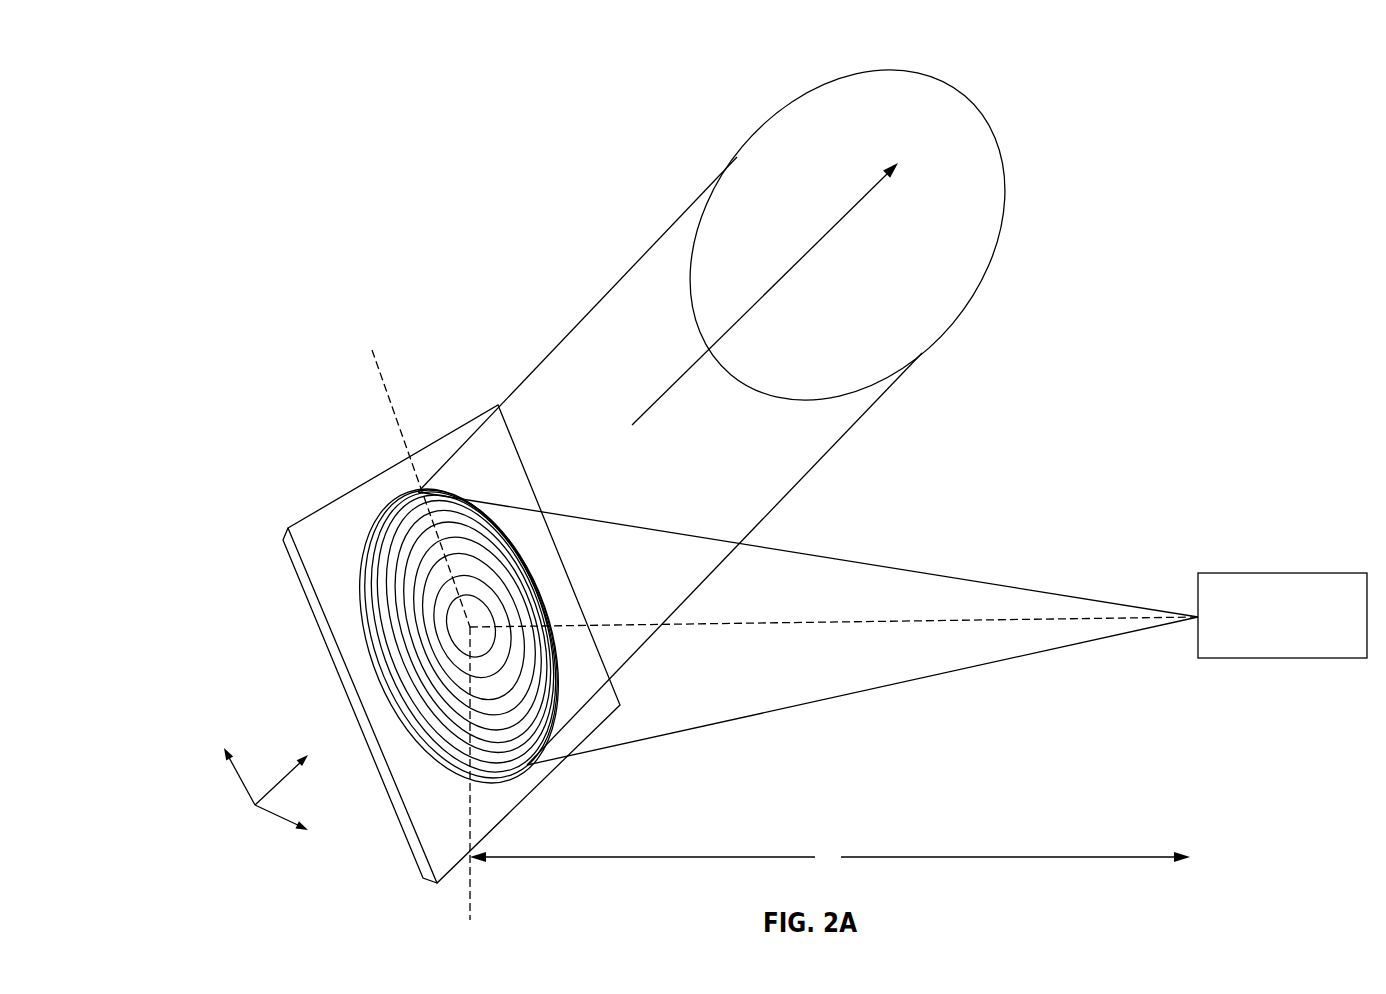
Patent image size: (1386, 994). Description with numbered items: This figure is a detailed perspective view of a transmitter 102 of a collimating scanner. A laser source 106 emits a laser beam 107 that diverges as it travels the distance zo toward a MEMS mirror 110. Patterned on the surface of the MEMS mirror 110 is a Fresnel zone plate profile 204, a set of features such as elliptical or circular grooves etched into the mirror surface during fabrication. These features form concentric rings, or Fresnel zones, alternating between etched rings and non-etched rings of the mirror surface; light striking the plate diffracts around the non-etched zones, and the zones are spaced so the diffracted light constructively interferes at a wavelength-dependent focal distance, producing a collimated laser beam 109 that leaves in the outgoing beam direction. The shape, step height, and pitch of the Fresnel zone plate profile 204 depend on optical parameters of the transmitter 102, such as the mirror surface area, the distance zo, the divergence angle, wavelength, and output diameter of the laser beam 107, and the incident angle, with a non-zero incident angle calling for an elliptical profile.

The transmitter 102 is at (103, 58).
The laser source 106 is at (1263, 640).
The laser beam 107 is at (867, 690).
The collimated laser beam 109 is at (570, 328).
The MEMS mirror 110 is at (333, 505).
The Fresnel zone plate profile 204 is at (367, 575).